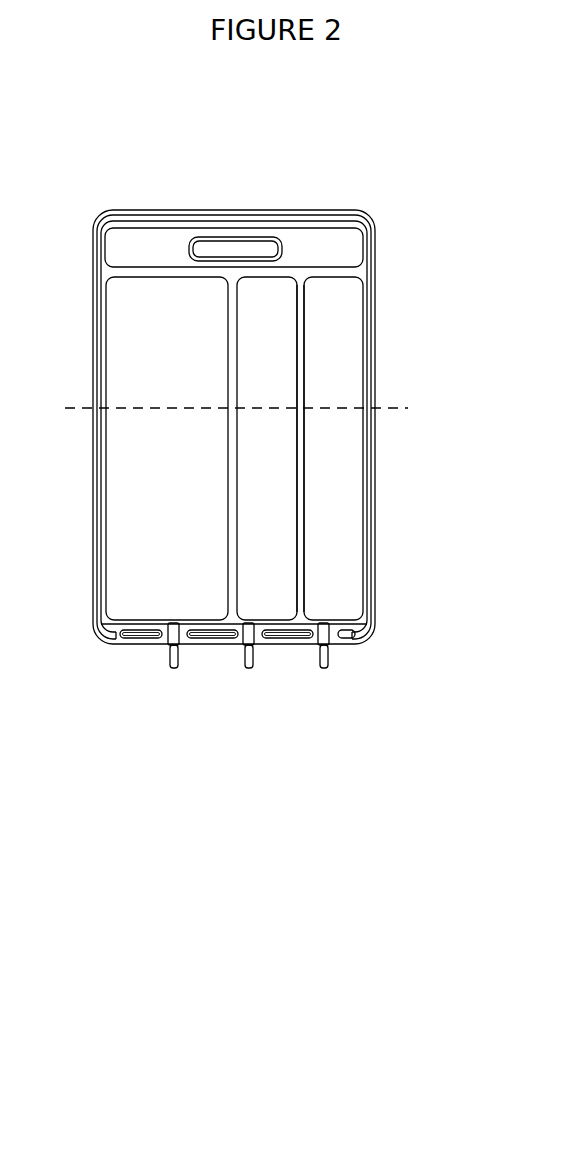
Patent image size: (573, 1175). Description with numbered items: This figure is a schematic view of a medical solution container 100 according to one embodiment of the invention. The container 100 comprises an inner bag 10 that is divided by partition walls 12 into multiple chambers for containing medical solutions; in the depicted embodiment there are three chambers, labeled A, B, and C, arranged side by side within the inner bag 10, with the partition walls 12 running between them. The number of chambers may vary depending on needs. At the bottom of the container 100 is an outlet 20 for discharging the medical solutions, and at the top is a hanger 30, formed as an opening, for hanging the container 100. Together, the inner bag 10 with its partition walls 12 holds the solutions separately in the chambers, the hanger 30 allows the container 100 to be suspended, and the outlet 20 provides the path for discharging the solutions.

The medical solution container 100 is at (180, 766).
The inner bag 10 is at (350, 562).
The partition wall 12 is at (298, 500).
The outlet 20 is at (329, 661).
The hanger 30 is at (251, 237).